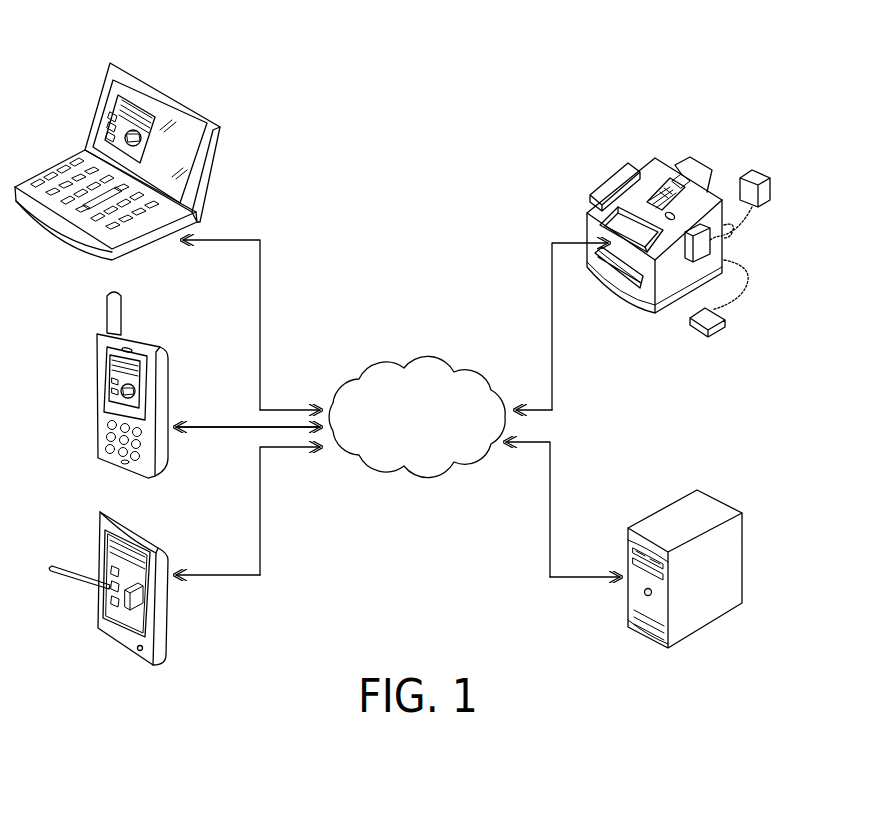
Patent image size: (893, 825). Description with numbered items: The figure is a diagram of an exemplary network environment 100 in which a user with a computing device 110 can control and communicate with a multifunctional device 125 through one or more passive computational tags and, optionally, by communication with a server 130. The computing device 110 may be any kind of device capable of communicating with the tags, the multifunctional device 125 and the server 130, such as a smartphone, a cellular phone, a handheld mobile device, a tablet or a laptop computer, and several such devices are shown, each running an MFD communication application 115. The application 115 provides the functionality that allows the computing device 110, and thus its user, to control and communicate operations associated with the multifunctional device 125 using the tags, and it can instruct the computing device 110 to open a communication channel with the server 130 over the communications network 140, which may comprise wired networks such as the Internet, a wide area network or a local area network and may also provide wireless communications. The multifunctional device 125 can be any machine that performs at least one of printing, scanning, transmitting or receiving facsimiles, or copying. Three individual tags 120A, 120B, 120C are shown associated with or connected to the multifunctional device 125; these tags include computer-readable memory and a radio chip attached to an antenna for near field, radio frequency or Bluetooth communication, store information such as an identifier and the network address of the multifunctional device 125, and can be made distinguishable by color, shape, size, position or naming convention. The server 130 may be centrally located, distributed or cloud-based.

The network environment 100 is at (447, 138).
The computing device 110 is at (100, 103).
The MFD communication application 115 is at (140, 112).
The tag 120A is at (700, 248).
The tag 120B is at (752, 170).
The tag 120C is at (715, 331).
The multifunctional device 125 is at (655, 158).
The server 130 is at (657, 510).
The communications network 140 is at (415, 362).